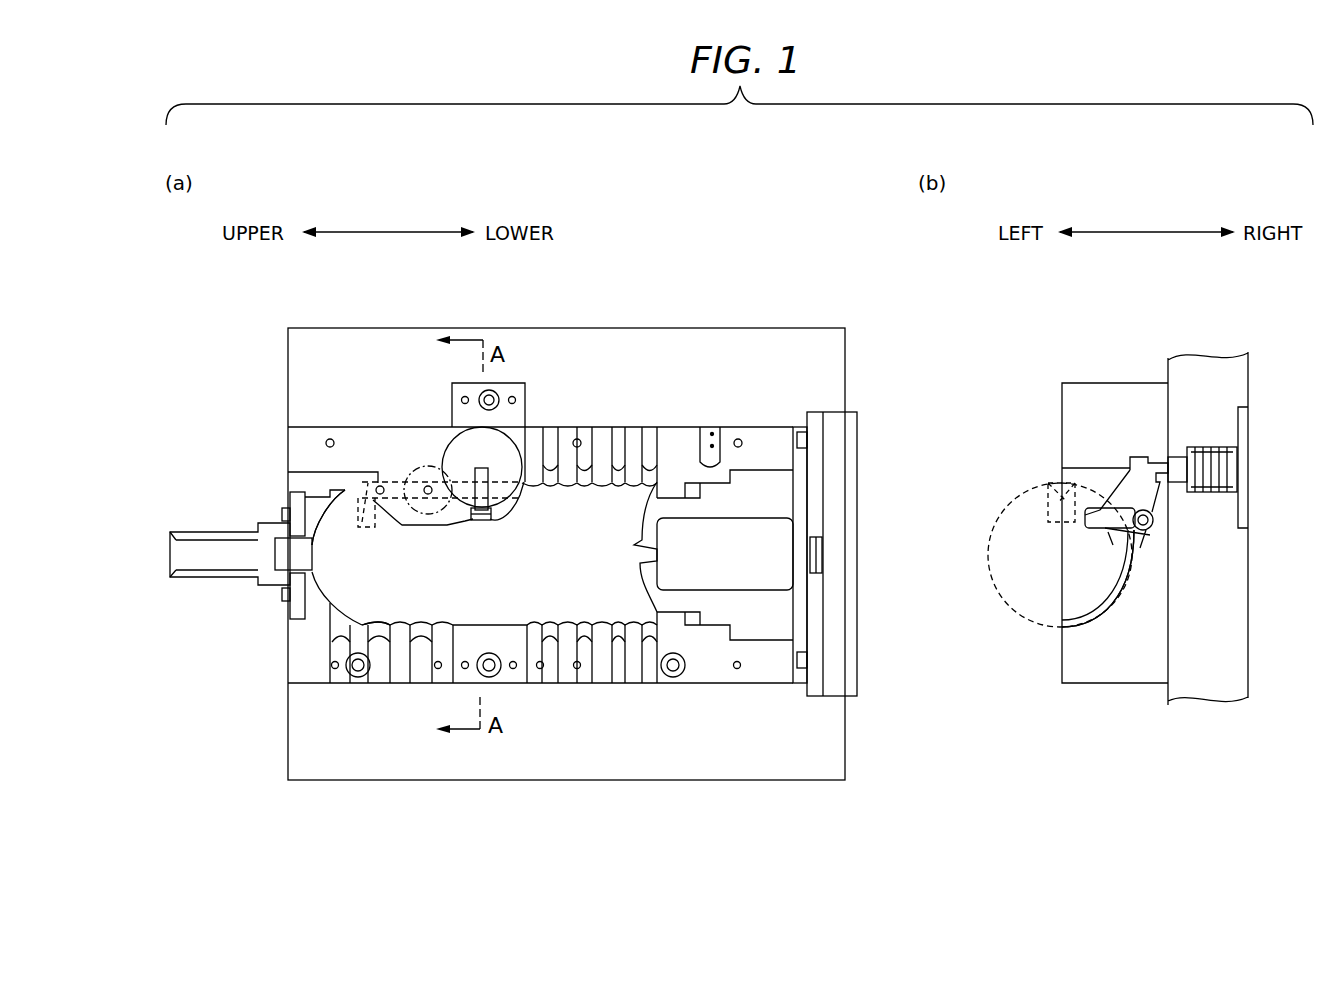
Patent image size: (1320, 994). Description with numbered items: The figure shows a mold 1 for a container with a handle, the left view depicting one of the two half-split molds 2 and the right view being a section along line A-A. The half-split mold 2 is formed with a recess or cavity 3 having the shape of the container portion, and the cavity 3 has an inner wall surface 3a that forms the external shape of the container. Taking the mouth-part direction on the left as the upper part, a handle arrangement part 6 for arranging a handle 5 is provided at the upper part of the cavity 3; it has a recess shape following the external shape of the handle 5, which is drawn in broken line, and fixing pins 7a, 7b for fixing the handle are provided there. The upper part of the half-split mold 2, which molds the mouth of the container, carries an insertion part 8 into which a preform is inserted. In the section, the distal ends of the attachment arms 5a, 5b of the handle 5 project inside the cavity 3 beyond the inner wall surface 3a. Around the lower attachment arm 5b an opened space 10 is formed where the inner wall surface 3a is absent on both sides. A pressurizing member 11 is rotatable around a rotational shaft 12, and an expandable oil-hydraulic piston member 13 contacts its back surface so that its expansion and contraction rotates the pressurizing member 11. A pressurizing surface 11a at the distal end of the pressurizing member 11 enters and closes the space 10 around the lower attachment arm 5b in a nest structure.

The mold for a container with a handle 1 is at (604, 282).
The half-split mold 2 is at (727, 362).
The recess (cavity) 3 is at (612, 505).
The inner wall surface 3a is at (520, 622).
The handle 5 is at (372, 478).
The attachment arm 5a is at (362, 522).
The lower attachment arm 5b is at (495, 508).
The handle arrangement part 6 is at (345, 498).
The fixing pin 7a is at (378, 470).
The fixing pin 7b is at (430, 486).
The insertion part 8 is at (220, 548).
The opened space 10 is at (1082, 537).
The pressurizing member 11 is at (492, 482).
The pressurizing surface 11a is at (1050, 517).
The rotational shaft 12 is at (1155, 522).
The oil-hydraulic piston member 13 is at (1182, 452).